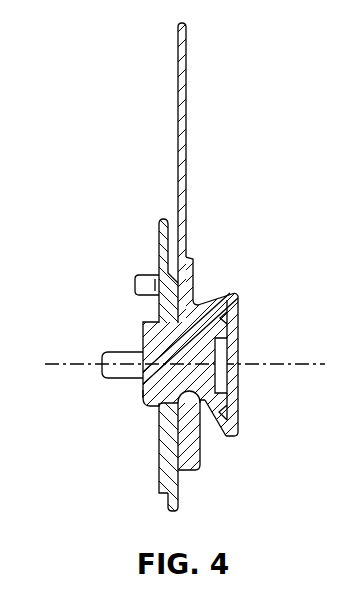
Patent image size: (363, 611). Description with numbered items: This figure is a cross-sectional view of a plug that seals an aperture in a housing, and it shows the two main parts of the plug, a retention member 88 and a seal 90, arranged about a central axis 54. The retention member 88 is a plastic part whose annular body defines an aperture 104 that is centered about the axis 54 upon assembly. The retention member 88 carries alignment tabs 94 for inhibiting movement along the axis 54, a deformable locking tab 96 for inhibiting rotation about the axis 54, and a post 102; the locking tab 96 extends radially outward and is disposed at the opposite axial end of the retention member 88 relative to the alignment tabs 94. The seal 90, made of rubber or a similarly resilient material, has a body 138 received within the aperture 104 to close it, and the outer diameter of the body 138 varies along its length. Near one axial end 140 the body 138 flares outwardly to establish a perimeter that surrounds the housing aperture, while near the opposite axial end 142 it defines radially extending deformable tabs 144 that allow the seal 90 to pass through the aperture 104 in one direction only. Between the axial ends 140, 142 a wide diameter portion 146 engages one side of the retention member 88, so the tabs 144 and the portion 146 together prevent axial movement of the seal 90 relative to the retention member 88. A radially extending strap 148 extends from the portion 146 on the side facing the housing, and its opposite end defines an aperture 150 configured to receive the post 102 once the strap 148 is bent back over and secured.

The axis 54 is at (280, 364).
The retention member 88 is at (151, 468).
The seal 90 is at (152, 348).
The alignment tabs 94 is at (179, 505).
The deformable locking tab 96 is at (163, 240).
The post 102 is at (140, 288).
The aperture 104 is at (197, 419).
The body 138 is at (223, 343).
The axial end 140 is at (242, 438).
The opposite axial end 142 is at (130, 408).
The deformable tabs 144 is at (150, 398).
The wide diameter portion 146 is at (191, 285).
The strap 148 is at (186, 160).
The aperture 150 is at (178, 43).